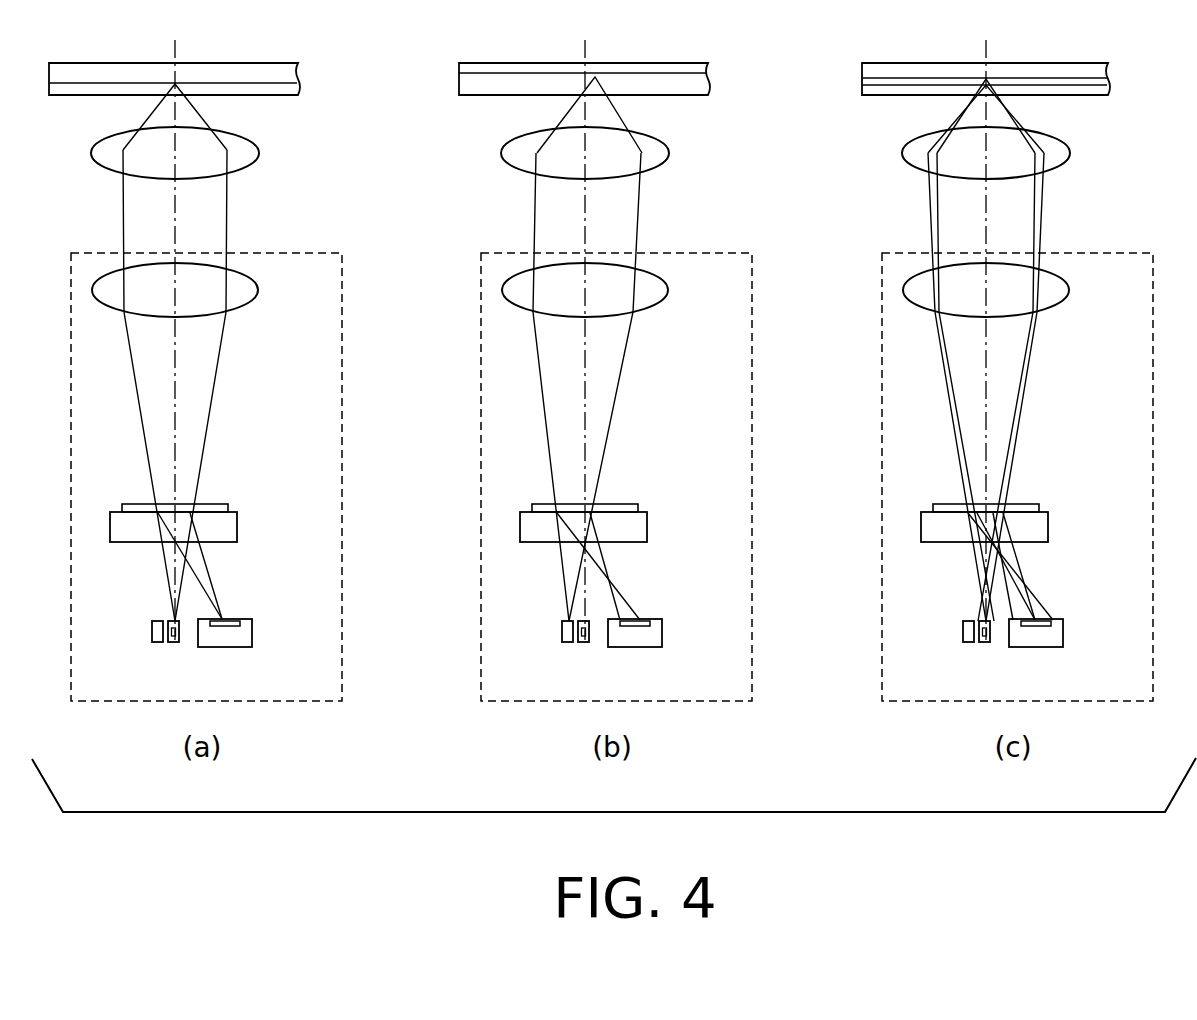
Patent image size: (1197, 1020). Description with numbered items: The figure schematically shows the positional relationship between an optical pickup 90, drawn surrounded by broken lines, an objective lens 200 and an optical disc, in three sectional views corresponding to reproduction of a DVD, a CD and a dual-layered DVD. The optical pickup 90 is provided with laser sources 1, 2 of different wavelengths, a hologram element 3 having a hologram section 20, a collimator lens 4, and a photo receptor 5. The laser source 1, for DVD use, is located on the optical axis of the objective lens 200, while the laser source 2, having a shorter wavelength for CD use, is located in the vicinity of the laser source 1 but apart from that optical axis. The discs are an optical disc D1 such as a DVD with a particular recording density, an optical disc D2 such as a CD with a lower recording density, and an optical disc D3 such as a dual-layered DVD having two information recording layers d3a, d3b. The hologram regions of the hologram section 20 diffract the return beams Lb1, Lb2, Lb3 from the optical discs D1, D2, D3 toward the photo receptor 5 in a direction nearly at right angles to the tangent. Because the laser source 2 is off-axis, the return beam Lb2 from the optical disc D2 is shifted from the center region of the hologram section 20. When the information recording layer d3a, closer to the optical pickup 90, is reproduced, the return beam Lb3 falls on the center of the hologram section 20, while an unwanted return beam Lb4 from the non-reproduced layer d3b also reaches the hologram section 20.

The optical disc D1 is at (250, 63).
The optical disc D2 is at (660, 63).
The optical disc D3 is at (1024, 64).
The information recording layer d3a is at (1108, 94).
The information recording layer d3b is at (1108, 71).
The objective lens 200 is at (259, 150).
The optical pickup 90 is at (298, 251).
The collimator lens 4 is at (254, 300).
The hologram section 20 is at (228, 506).
The hologram element 3 is at (237, 526).
The laser source 2 is at (153, 643).
The laser source 1 is at (173, 643).
The photo receptor 5 is at (647, 657).
The return beam Lb1 is at (214, 573).
The return beam Lb2 is at (612, 565).
The return beam Lb3 is at (1017, 552).
The return beam Lb4 is at (1037, 595).